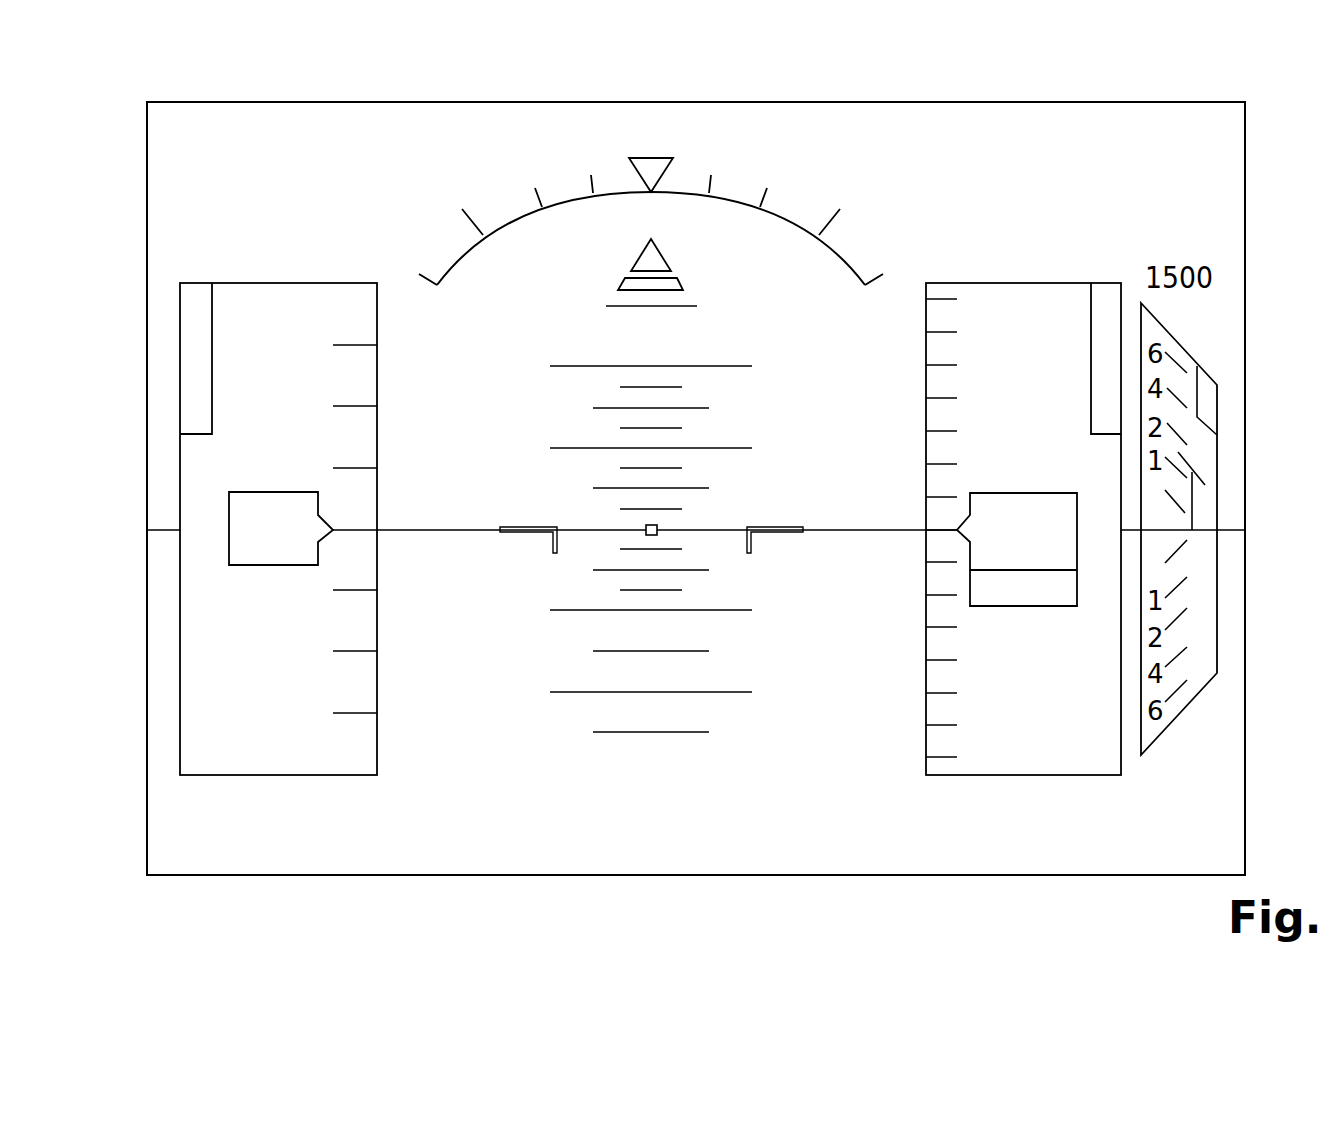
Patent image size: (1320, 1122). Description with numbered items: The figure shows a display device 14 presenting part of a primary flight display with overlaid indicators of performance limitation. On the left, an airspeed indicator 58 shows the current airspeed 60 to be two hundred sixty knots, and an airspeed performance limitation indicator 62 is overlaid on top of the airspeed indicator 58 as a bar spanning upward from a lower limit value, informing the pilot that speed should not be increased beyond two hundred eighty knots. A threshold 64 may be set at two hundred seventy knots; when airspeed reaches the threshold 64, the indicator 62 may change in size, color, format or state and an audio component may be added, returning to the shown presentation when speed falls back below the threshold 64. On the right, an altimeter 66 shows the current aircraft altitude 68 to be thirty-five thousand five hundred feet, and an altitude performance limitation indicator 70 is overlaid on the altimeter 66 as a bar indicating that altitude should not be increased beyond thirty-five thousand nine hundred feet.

The display device 14 is at (1218, 102).
The airspeed indicator 58 is at (259, 290).
The airspeed performance limitation indicator 62 is at (193, 290).
The threshold 64 is at (333, 468).
The current airspeed 60 is at (257, 565).
The altimeter 66 is at (1040, 290).
The altitude performance limitation indicator 70 is at (1107, 290).
The current aircraft altitude 68 is at (1077, 570).